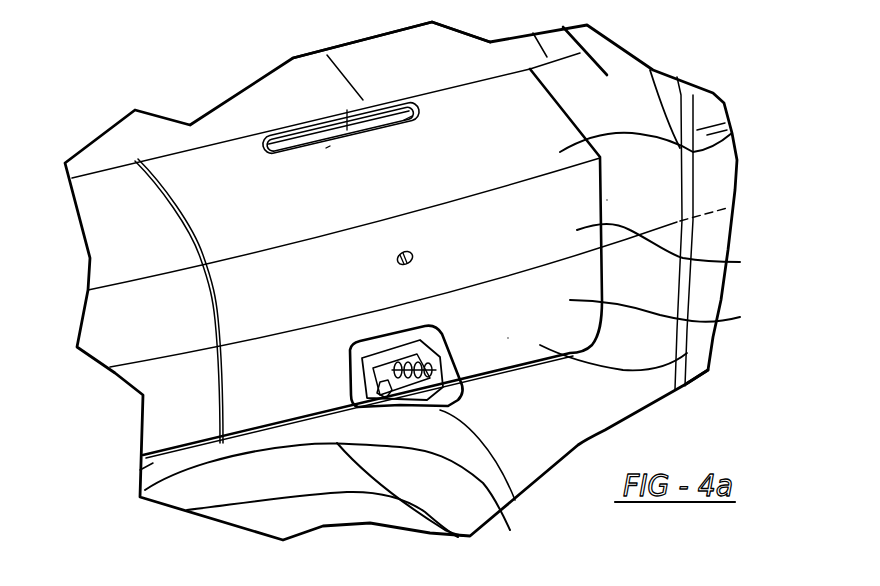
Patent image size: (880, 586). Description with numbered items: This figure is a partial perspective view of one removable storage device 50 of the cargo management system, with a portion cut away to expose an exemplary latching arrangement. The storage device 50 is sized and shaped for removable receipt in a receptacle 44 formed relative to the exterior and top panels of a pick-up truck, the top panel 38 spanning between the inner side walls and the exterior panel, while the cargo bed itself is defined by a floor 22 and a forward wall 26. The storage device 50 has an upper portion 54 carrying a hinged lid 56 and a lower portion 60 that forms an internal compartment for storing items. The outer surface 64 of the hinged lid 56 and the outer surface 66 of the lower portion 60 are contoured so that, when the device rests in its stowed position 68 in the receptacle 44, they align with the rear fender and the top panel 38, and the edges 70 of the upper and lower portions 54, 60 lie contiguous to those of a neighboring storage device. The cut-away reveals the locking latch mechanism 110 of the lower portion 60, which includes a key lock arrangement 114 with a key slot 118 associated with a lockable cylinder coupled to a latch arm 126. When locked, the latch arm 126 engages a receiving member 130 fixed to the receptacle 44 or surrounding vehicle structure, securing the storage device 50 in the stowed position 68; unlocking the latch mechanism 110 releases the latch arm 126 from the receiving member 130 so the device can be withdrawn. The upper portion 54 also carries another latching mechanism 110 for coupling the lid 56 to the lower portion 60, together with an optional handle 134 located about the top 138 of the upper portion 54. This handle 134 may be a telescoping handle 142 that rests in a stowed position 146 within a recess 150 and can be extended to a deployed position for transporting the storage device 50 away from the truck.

The floor 22 is at (150, 143).
The forward wall 26 is at (380, 60).
The top panel 38 is at (603, 123).
The receptacle 44 is at (199, 456).
The removable storage device 50 is at (124, 407).
The upper portion 54 is at (609, 200).
The hinged lid 56 is at (730, 140).
The lower portion 60 is at (573, 301).
The outer surface of hinged lid 64 is at (669, 248).
The outer surface of lower portion 66 is at (688, 384).
The stowed position 68 is at (540, 327).
The edges 70 is at (157, 193).
The locking latch mechanism 110 is at (428, 242).
The key lock arrangement 114 is at (395, 260).
The key slot 118 is at (509, 340).
The latch arm 126 is at (430, 402).
The receiving member 130 is at (388, 400).
The handle 134 is at (404, 120).
The top 138 is at (540, 127).
The telescoping handle 142 is at (293, 147).
The stowed position 146 is at (347, 130).
The recess 150 is at (326, 148).